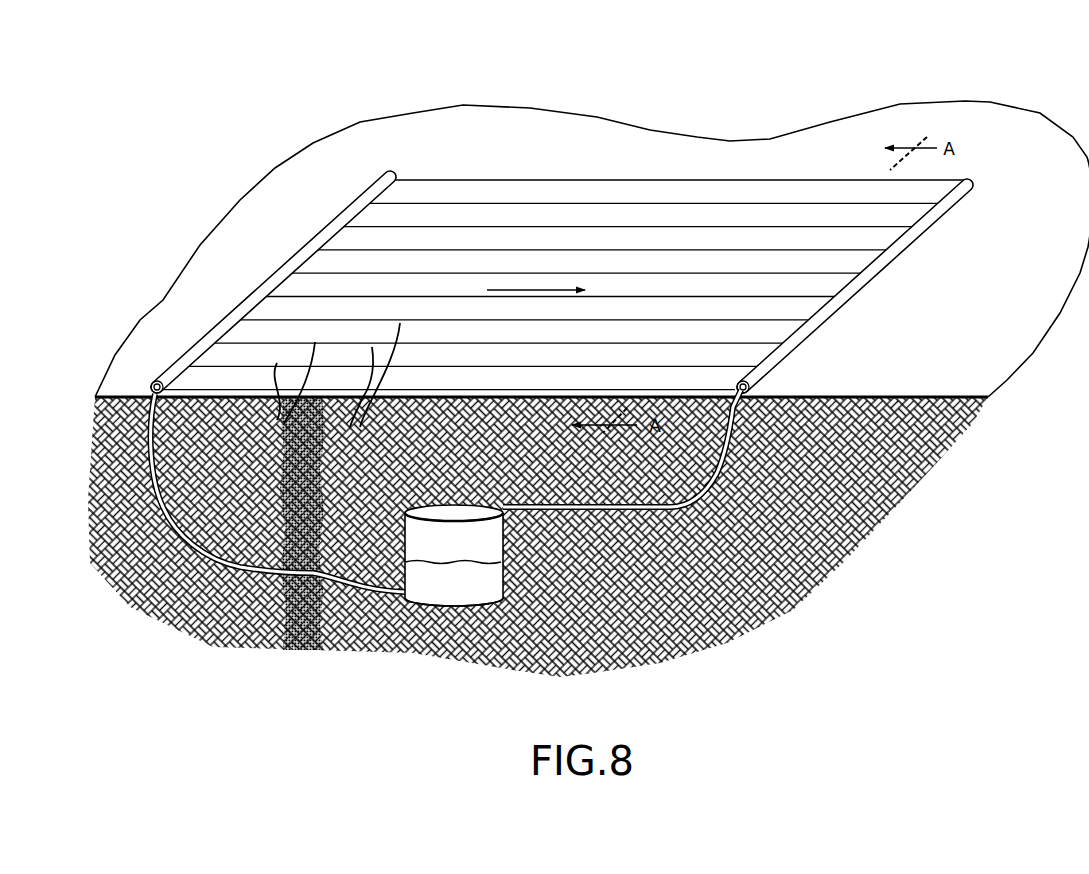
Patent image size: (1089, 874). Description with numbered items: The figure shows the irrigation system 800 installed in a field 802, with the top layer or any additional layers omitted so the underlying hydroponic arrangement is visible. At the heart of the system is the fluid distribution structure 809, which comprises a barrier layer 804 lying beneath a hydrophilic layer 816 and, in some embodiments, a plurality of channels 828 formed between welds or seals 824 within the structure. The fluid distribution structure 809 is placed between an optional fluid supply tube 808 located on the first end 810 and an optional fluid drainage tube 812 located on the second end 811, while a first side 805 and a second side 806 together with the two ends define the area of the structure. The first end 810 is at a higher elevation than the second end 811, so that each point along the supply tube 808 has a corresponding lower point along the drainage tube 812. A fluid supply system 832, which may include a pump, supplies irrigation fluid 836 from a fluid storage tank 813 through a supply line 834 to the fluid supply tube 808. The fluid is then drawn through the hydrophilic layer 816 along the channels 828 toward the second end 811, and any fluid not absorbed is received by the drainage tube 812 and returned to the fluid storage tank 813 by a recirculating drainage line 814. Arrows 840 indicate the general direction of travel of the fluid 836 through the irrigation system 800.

The irrigation system 800 is at (672, 78).
The field 802 is at (242, 247).
The barrier layer 804 is at (533, 399).
The first side 805 is at (198, 400).
The second side 806 is at (722, 177).
The fluid supply tube 808 is at (163, 364).
The fluid distribution structure 809 is at (761, 176).
The first end 810 is at (213, 320).
The second end 811 is at (817, 335).
The fluid drainage tube 812 is at (847, 293).
The fluid storage tank 813 is at (403, 537).
The recirculating drainage line 814 is at (727, 443).
The hydrophilic layer 816 is at (430, 400).
The welds or seals 824 is at (560, 203).
The channels 828 is at (458, 210).
The fluid supply system 832 is at (512, 578).
The supply line 834 is at (247, 567).
The fluid 836 is at (482, 592).
The arrows 840 is at (535, 288).